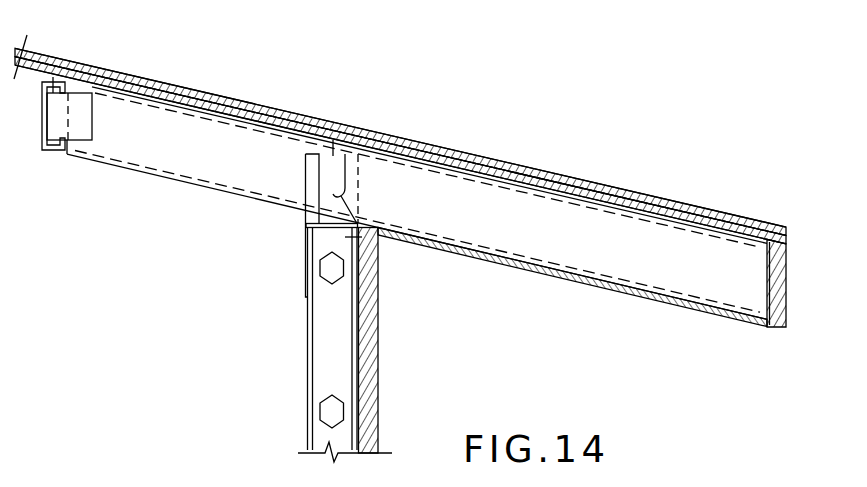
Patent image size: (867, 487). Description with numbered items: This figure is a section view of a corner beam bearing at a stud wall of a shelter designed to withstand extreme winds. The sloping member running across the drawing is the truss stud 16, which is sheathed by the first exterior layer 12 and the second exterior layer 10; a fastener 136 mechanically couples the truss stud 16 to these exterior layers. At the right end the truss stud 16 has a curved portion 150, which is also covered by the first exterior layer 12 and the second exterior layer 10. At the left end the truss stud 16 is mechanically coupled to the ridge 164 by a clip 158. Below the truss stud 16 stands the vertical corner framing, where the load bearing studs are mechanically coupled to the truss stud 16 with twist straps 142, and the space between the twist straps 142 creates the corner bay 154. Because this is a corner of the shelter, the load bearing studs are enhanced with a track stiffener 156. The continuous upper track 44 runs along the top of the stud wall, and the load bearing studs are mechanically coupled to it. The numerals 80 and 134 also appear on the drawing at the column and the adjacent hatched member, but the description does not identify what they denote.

The second exterior layer 10 is at (625, 200).
The first exterior layer 12 is at (447, 143).
The truss stud 16 is at (152, 88).
The continuous upper track 44 is at (304, 251).
The column 80 is at (275, 367).
The furring strip 134 is at (380, 365).
The fastener 136 is at (342, 138).
The twist strap 142 is at (303, 226).
The curved portion 150 is at (777, 310).
The corner bay 154 is at (338, 190).
The track stiffener 156 is at (365, 252).
The clip 158 is at (37, 160).
The ridge 164 is at (98, 82).